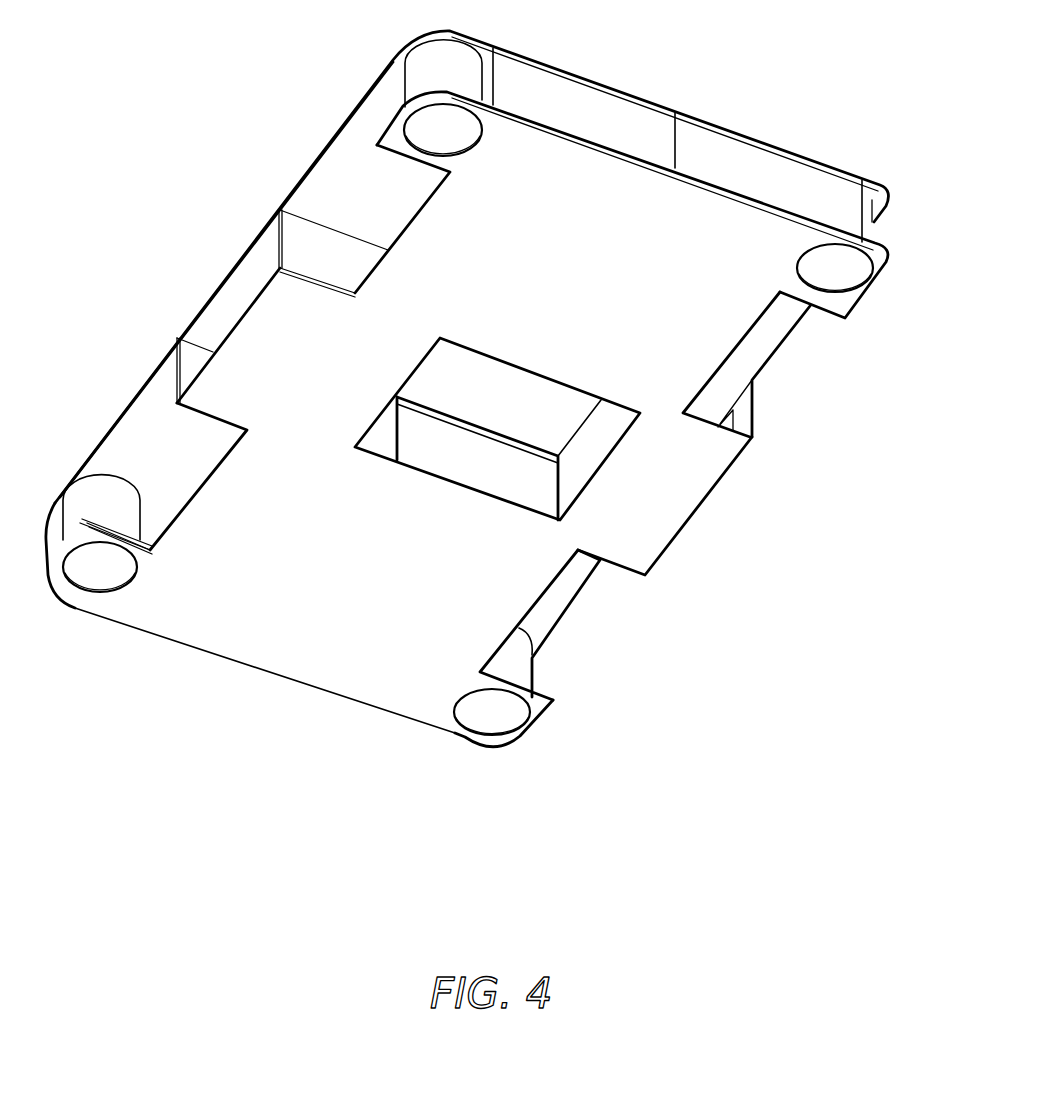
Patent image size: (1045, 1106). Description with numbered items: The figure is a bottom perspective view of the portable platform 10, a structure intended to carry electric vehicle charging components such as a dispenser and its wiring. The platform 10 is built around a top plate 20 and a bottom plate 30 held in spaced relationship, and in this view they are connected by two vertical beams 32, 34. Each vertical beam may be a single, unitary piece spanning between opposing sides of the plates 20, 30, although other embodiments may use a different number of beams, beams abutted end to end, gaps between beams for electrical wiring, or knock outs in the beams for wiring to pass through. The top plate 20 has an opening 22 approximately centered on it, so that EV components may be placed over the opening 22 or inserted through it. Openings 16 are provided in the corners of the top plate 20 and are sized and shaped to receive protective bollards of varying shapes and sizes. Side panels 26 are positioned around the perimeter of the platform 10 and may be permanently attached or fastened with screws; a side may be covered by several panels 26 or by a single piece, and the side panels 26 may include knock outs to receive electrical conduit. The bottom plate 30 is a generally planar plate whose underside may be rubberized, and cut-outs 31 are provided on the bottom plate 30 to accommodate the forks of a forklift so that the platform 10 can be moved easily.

The portable platform 10 is at (283, 712).
The openings 16 is at (442, 130).
The top plate 20 is at (353, 160).
The opening 22 is at (520, 407).
The side panels 26 is at (770, 165).
The bottom plate 30 is at (648, 311).
The cut-outs 31 is at (773, 377).
The vertical beam 32 is at (185, 358).
The vertical beam 34 is at (290, 232).